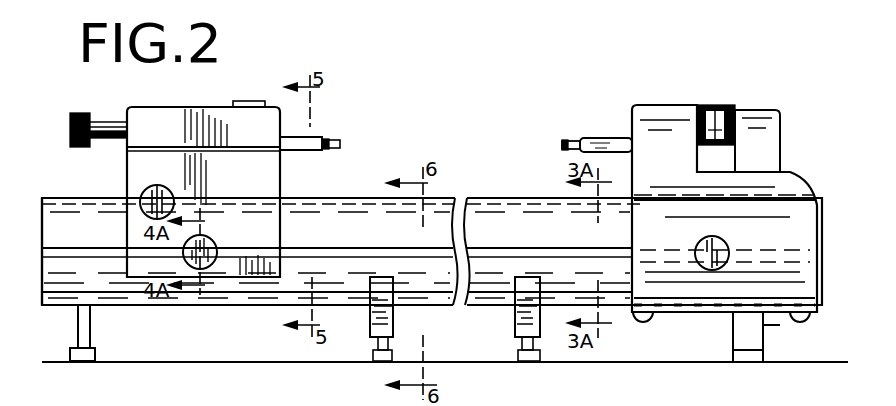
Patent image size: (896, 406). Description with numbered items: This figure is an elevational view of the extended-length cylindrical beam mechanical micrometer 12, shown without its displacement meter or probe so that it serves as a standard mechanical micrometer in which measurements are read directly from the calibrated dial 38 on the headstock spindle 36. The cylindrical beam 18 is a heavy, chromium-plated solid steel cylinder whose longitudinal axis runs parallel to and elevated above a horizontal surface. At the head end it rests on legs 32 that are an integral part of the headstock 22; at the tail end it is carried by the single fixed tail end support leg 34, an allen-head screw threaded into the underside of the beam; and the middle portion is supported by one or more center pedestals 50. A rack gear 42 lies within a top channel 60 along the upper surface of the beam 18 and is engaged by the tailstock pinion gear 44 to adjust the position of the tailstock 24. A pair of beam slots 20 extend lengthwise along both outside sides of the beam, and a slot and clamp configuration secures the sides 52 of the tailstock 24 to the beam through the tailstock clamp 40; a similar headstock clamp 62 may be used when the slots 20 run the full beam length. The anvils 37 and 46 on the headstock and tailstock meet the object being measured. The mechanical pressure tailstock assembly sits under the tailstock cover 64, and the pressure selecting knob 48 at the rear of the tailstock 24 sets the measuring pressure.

The extended-length cylindrical beam mechanical micrometer 12 is at (453, 128).
The cylindrical beam 18 is at (498, 227).
The beam slots 20 is at (396, 230).
The headstock 22 is at (783, 187).
The tailstock 24 is at (228, 173).
The legs 32 is at (747, 337).
The tail end support leg 34 is at (90, 322).
The headstock spindle 36 is at (607, 140).
The anvil 37 is at (572, 140).
The calibrated dial 38 is at (717, 107).
The tailstock clamp 40 is at (213, 242).
The rack gear 42 is at (78, 198).
The tailstock pinion gear 44 is at (150, 196).
The anvil 46 is at (330, 138).
The pressure selecting knob 48 is at (74, 113).
The center pedestals 50 is at (377, 325).
The sides of the tailstock 52 is at (270, 265).
The top channel 60 is at (42, 198).
The headstock clamp 62 is at (722, 243).
The tailstock cover 64 is at (153, 127).